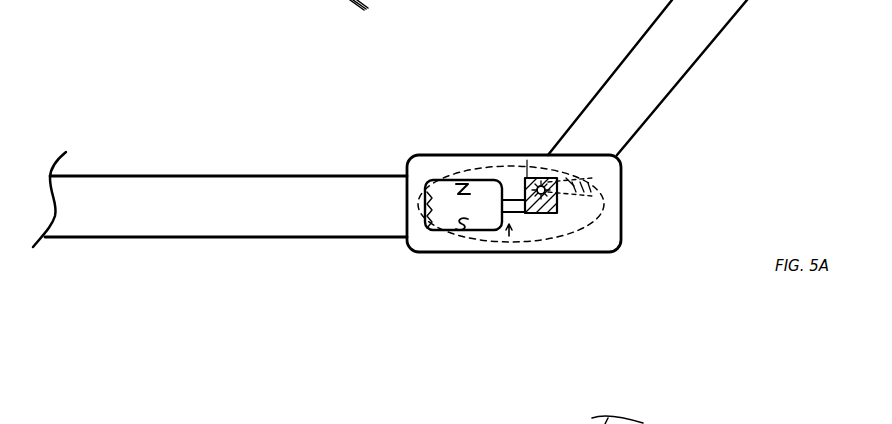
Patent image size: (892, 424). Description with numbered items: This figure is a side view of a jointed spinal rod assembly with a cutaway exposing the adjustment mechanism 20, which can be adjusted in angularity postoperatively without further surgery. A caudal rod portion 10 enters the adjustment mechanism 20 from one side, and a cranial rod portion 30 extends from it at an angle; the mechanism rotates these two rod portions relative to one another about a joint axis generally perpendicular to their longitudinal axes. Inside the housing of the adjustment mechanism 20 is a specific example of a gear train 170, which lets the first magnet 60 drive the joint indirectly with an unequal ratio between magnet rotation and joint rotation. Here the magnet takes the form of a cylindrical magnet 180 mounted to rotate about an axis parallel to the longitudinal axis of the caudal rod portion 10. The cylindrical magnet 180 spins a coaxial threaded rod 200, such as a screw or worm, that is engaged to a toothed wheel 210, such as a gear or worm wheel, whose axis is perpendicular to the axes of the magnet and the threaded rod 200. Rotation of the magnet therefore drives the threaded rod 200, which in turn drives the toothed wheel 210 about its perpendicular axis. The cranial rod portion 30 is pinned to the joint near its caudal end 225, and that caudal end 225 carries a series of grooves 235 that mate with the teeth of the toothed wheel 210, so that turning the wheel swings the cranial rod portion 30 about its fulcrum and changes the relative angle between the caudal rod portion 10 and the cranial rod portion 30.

The caudal rod portion 10 is at (230, 238).
The adjustment mechanism 20 is at (647, 228).
The cranial rod portion 30 is at (721, 17).
The first magnet 60 is at (482, 218).
The gear train 170 is at (506, 225).
The cylindrical magnet 180 is at (425, 283).
The threaded rod 200 is at (529, 212).
The toothed wheel 210 is at (527, 177).
The caudal end 225 is at (571, 186).
The grooves 235 is at (572, 185).